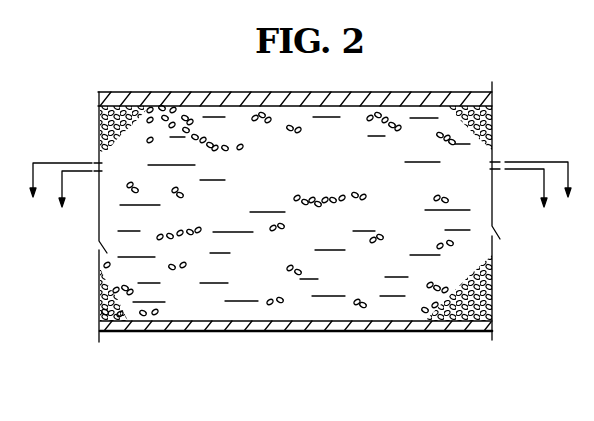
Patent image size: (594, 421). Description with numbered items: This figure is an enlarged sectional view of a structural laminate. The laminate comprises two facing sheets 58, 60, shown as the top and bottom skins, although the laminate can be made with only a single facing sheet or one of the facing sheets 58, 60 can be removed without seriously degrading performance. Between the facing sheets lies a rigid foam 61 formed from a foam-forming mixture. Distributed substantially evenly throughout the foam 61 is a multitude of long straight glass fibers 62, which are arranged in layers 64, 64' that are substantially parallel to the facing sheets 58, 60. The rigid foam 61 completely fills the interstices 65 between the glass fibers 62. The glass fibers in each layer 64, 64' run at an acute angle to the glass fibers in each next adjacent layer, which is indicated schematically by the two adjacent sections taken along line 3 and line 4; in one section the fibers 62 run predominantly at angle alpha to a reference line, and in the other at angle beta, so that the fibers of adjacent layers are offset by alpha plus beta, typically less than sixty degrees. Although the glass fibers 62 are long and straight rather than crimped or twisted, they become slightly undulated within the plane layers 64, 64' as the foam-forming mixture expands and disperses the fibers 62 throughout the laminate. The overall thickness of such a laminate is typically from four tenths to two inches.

The section line 3- 3 is at (300, 190).
The section line 4- 4 is at (302, 199).
The facing sheet 58 is at (155, 93).
The facing sheet 60 is at (355, 332).
The rigid foam 61 is at (485, 260).
The glass fibers 62 is at (223, 282).
The layer 64 is at (278, 210).
The layer 64' is at (337, 206).
The interstices 65 is at (376, 283).